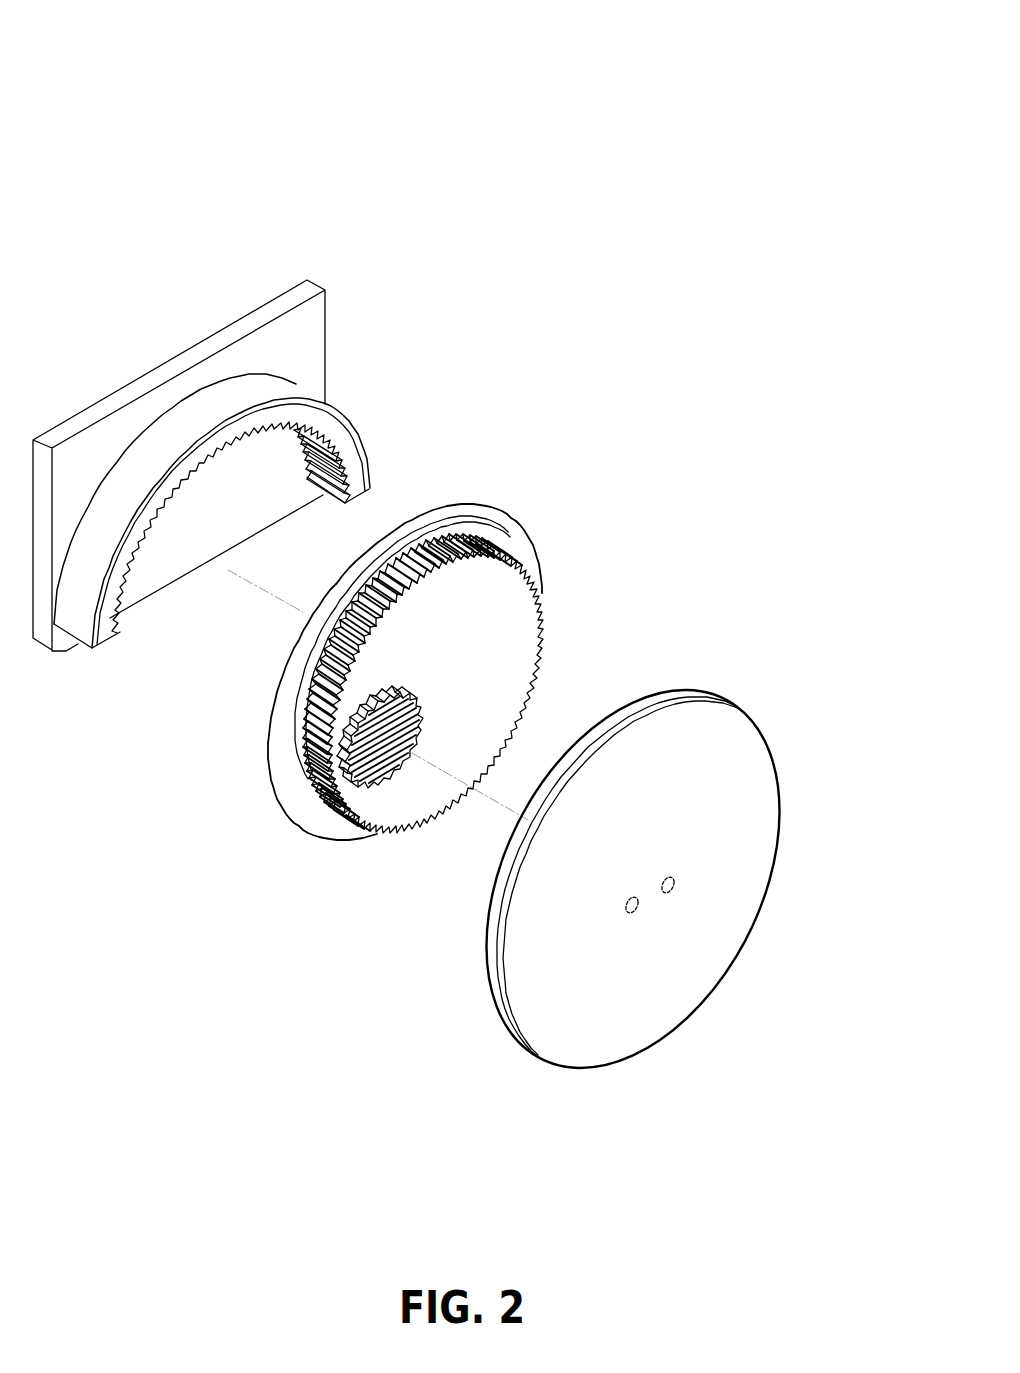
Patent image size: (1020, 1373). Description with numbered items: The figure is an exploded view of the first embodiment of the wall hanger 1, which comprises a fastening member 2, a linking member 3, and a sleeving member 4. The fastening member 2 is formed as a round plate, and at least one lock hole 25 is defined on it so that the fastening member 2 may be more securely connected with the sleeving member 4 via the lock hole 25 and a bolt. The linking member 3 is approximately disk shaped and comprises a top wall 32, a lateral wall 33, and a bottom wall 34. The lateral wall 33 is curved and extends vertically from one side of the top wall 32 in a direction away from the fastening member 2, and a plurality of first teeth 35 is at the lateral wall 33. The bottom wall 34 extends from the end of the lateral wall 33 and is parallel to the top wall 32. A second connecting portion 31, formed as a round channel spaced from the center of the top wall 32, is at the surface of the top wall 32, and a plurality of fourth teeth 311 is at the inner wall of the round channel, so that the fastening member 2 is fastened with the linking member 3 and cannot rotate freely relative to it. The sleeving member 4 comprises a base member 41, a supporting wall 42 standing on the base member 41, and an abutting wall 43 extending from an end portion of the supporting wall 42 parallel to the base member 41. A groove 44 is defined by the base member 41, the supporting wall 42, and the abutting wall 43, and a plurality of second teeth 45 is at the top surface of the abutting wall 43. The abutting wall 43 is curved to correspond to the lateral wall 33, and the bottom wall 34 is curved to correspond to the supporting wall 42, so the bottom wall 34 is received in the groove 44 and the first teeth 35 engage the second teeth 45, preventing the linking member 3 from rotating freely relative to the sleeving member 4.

The wall hanger 1 is at (90, 31).
The fastening member 2 is at (710, 692).
The lock hole 25 is at (675, 885).
The linking member 3 is at (498, 507).
The second connecting portion 31 is at (378, 797).
The fourth teeth 311 is at (357, 775).
The top wall 32 is at (512, 607).
The lateral wall 33 is at (307, 772).
The bottom wall 34 is at (508, 542).
The first teeth 35 is at (315, 792).
The sleeving member 4 is at (337, 313).
The base member 41 is at (75, 446).
The supporting wall 42 is at (209, 396).
The abutting wall 43 is at (347, 449).
The groove 44 is at (316, 462).
The second teeth 45 is at (153, 548).